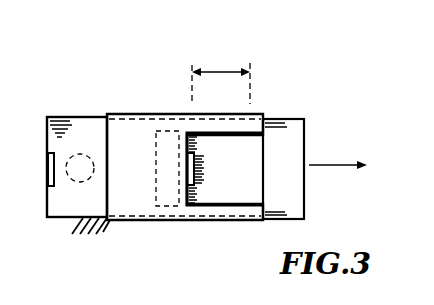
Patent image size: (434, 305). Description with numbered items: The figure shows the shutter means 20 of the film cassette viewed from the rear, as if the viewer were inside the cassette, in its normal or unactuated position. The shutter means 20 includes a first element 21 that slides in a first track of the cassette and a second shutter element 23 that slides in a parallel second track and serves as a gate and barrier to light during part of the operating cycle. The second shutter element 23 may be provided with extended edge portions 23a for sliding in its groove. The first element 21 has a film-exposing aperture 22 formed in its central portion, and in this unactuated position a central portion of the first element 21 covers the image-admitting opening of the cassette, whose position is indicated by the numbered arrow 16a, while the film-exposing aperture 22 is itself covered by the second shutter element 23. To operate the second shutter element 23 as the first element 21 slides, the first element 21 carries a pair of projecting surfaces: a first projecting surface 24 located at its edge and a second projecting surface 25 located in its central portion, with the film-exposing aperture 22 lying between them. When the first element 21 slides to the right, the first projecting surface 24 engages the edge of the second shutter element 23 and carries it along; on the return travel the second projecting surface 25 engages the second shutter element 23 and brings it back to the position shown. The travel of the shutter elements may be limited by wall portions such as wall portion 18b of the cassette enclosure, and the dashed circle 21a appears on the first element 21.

The numbered arrow 16a is at (222, 67).
The shutter means 20 is at (318, 111).
The first element 21 is at (80, 120).
The pivot hole 21a is at (80, 168).
The film-exposing aperture 22 is at (163, 133).
The second shutter element 23 is at (127, 197).
The extended edge portions 23a is at (239, 221).
The first projecting surface 24 is at (47, 168).
The second projecting surface 25 is at (194, 168).
The wall portion 18b is at (107, 220).